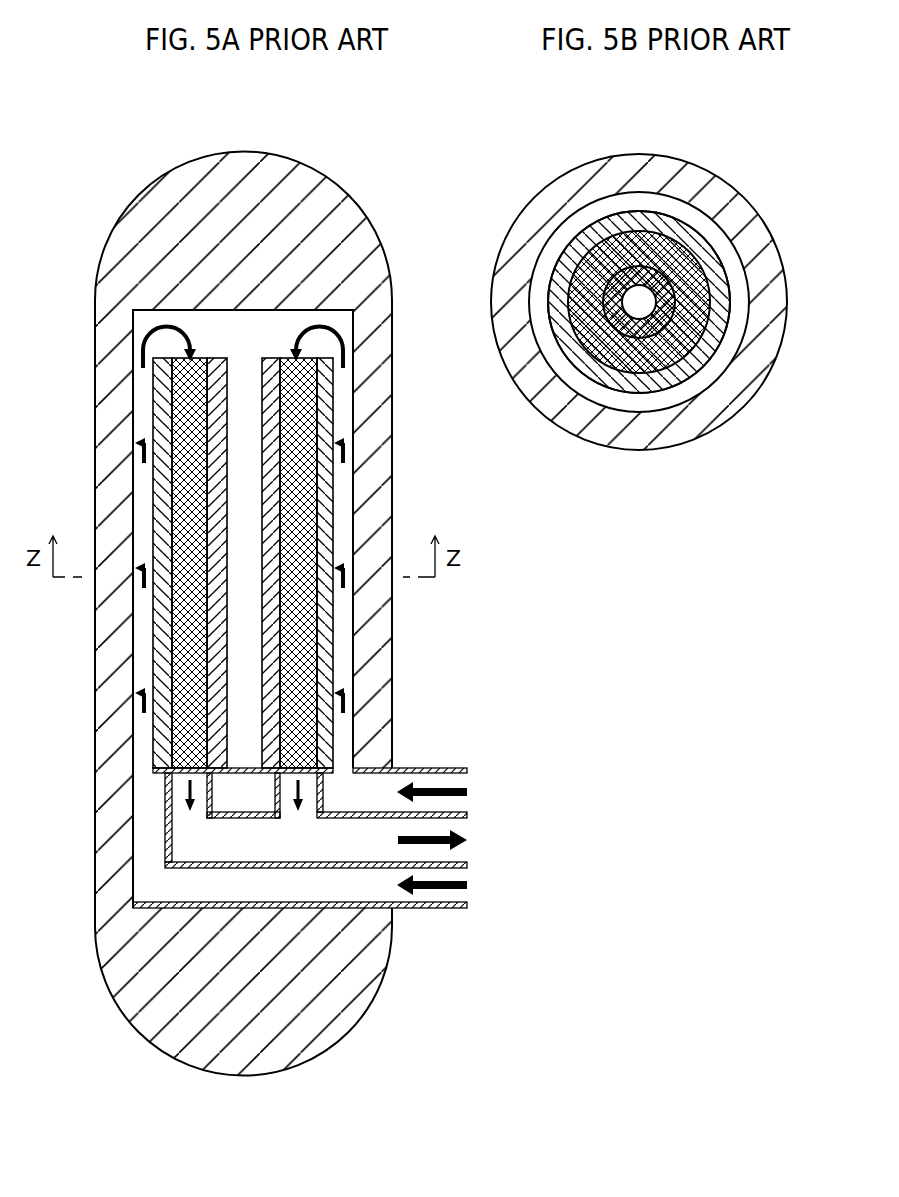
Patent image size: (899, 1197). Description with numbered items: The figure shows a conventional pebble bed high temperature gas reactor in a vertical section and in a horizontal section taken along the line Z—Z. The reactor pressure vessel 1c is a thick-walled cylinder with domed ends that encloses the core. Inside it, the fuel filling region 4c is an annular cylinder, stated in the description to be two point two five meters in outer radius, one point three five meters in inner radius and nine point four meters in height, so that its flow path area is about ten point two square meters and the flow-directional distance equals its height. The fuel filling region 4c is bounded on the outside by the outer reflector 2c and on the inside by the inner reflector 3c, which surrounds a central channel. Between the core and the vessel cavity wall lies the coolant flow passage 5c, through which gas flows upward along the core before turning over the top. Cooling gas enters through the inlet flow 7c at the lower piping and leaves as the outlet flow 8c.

In FIG. 5A, the reactor pressure vessel 1c is at (277, 170).
In FIG. 5B, the reactor pressure vessel 1c is at (645, 170).
In FIG. 5A, the outer reflector 2c is at (327, 622).
In FIG. 5B, the outer reflector 2c is at (715, 335).
In FIG. 5A, the inner reflector 3c is at (270, 368).
In FIG. 5B, the inner reflector 3c is at (685, 238).
In FIG. 5A, the fuel filling region 4c is at (313, 402).
In FIG. 5B, the fuel filling region 4c is at (707, 290).
In FIG. 5A, the coolant flow passage 5c is at (345, 738).
In FIG. 5B, the coolant flow passage 5c is at (700, 378).
In FIG. 5A, the coolant inlet flow 7c is at (433, 798).
In FIG. 5A, the coolant outlet flow 8c is at (433, 847).